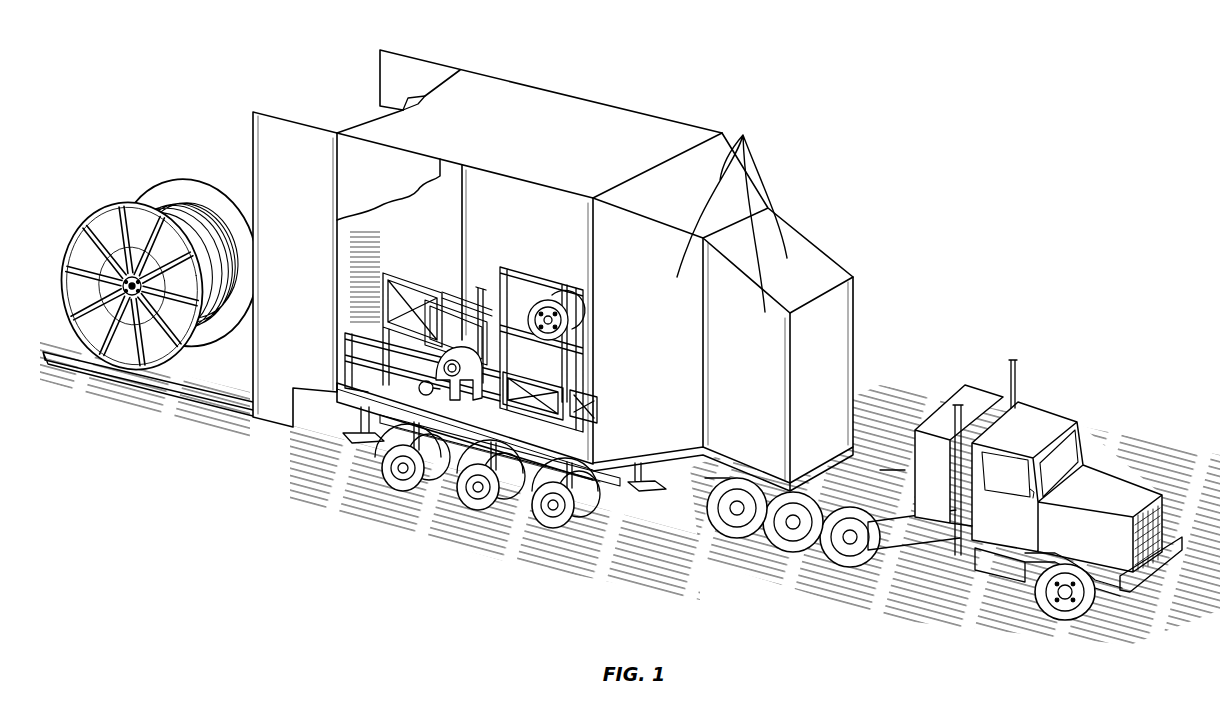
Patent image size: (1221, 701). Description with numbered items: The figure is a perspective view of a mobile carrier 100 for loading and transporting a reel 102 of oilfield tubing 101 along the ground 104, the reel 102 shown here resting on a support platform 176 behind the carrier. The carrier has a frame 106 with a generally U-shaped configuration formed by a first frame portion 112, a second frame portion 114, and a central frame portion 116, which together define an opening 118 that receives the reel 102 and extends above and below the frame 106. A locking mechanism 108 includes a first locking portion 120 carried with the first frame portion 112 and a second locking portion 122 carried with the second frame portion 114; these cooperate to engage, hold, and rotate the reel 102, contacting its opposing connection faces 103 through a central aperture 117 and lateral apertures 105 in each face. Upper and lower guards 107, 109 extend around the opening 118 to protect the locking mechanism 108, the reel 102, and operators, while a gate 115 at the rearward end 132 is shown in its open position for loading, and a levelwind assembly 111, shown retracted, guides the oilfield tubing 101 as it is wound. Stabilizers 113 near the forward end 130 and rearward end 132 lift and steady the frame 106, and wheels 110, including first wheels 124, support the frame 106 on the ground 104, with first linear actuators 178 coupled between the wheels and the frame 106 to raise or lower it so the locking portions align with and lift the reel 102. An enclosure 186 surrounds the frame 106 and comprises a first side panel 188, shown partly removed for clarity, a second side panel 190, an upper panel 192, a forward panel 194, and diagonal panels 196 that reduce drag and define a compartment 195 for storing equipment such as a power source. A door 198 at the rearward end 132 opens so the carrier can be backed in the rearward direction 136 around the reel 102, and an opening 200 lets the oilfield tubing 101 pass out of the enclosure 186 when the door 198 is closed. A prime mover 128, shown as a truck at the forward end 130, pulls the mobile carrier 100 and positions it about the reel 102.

The mobile carrier 100 is at (630, 324).
The oilfield tubing 101 is at (180, 213).
The reel 102 is at (156, 299).
The connection face 103 is at (82, 223).
The ground 104 is at (585, 415).
The lateral aperture 105 is at (130, 300).
The frame 106 is at (375, 400).
The upper guard 107 is at (388, 340).
The locking mechanism 108 is at (480, 500).
The lower guard 109 is at (402, 420).
The wheels 110 is at (558, 530).
The levelwind assembly 111 is at (586, 310).
The first frame portion 112 is at (397, 408).
The stabilizers 113 is at (383, 390).
The second frame portion 114 is at (492, 330).
The gate 115 is at (345, 327).
The central frame portion 116 is at (590, 410).
The central aperture 117 is at (76, 330).
The opening 118 is at (383, 330).
The first locking portion 120 is at (452, 345).
The second locking portion 122 is at (566, 334).
The first wheels 124 is at (500, 522).
The prime mover 128 is at (1078, 390).
The forward end 130 is at (820, 351).
The rearward end 132 is at (595, 247).
The rearward direction 136 is at (285, 516).
The support platform 176 is at (200, 395).
The first linear actuators 178 is at (400, 470).
The enclosure 186 is at (633, 108).
The first side panel 188 is at (408, 163).
The second side panel 190 is at (487, 187).
The upper panel 192 is at (520, 97).
The forward panel 194 is at (845, 300).
The compartment 195 is at (767, 360).
The diagonal panels 196 is at (732, 209).
The door 198 is at (296, 117).
The opening 200 is at (410, 95).